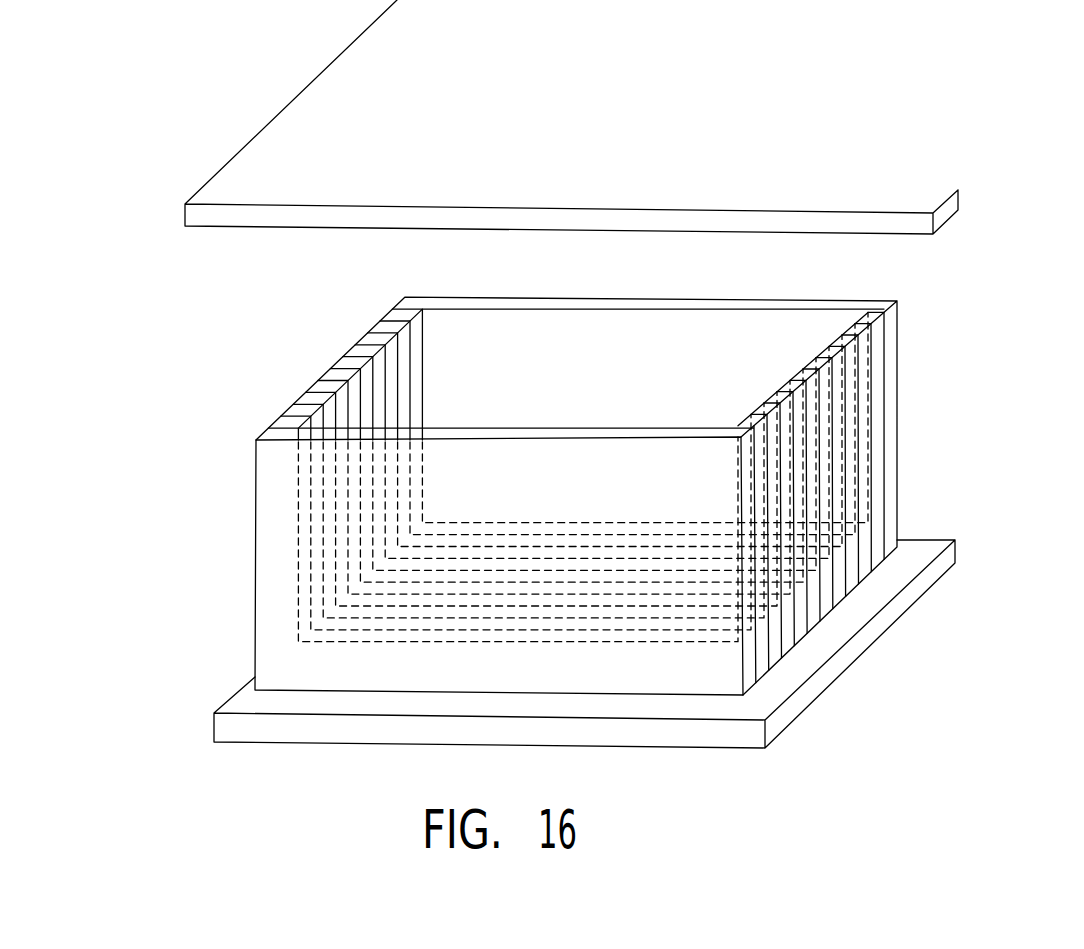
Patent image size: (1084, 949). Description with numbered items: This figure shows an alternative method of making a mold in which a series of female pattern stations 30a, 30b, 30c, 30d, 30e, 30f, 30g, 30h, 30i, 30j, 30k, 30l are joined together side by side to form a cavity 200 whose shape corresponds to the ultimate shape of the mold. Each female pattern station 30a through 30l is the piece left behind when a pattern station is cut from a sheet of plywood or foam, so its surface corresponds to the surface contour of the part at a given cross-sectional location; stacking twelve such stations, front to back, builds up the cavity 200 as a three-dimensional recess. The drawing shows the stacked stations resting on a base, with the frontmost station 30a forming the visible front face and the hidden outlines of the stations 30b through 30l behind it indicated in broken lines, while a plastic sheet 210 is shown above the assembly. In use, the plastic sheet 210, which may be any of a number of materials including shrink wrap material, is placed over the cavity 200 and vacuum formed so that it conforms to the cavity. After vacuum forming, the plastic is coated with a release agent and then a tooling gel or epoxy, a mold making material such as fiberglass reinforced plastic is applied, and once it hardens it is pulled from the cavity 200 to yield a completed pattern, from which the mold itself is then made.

The plastic sheet 210 is at (325, 115).
The cavity 200 is at (582, 377).
The female pattern station 30a is at (258, 437).
The female pattern station 30b is at (278, 427).
The female pattern station 30c is at (288, 414).
The female pattern station 30d is at (300, 399).
The female pattern station 30e is at (318, 380).
The female pattern station 30f is at (330, 369).
The female pattern station 30g is at (343, 357).
The female pattern station 30h is at (355, 345).
The female pattern station 30i is at (368, 333).
The female pattern station 30j is at (372, 328).
The female pattern station 30k is at (380, 321).
The female pattern station 30l is at (410, 296).